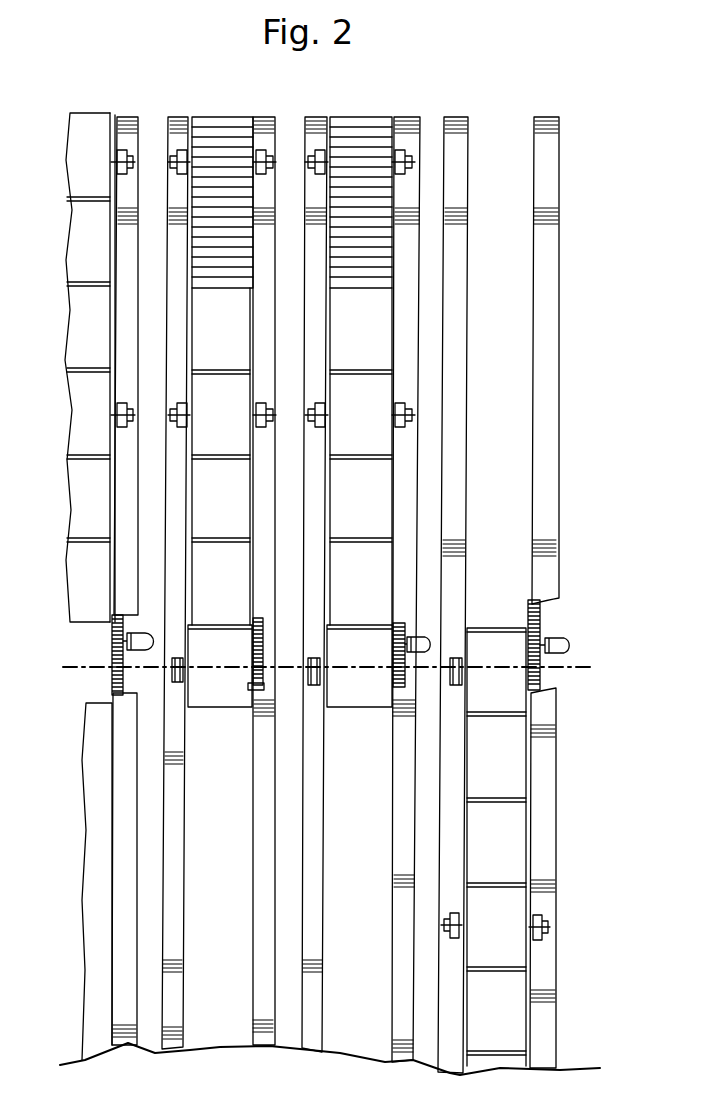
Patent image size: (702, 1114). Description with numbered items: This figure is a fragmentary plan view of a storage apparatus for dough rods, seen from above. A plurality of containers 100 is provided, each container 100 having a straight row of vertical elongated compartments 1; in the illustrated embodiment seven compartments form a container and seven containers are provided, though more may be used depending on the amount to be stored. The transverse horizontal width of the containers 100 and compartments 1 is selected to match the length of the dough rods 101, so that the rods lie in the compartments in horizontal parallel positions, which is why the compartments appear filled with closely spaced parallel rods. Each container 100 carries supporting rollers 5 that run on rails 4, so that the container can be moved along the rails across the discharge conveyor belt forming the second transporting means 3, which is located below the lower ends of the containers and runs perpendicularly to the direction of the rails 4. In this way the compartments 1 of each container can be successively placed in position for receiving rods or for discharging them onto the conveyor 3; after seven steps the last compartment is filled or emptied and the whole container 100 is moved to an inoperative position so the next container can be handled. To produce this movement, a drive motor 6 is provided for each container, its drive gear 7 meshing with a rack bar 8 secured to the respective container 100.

The compartment 1 is at (90, 232).
The second transporting means 3 is at (586, 665).
The rails 4 is at (128, 128).
The supporting rollers 5 is at (128, 157).
The drive motor 6 is at (112, 675).
The drive gear 7 is at (112, 637).
The rack bar 8 is at (248, 690).
The container 100 is at (222, 145).
The dough rods 101 is at (236, 275).